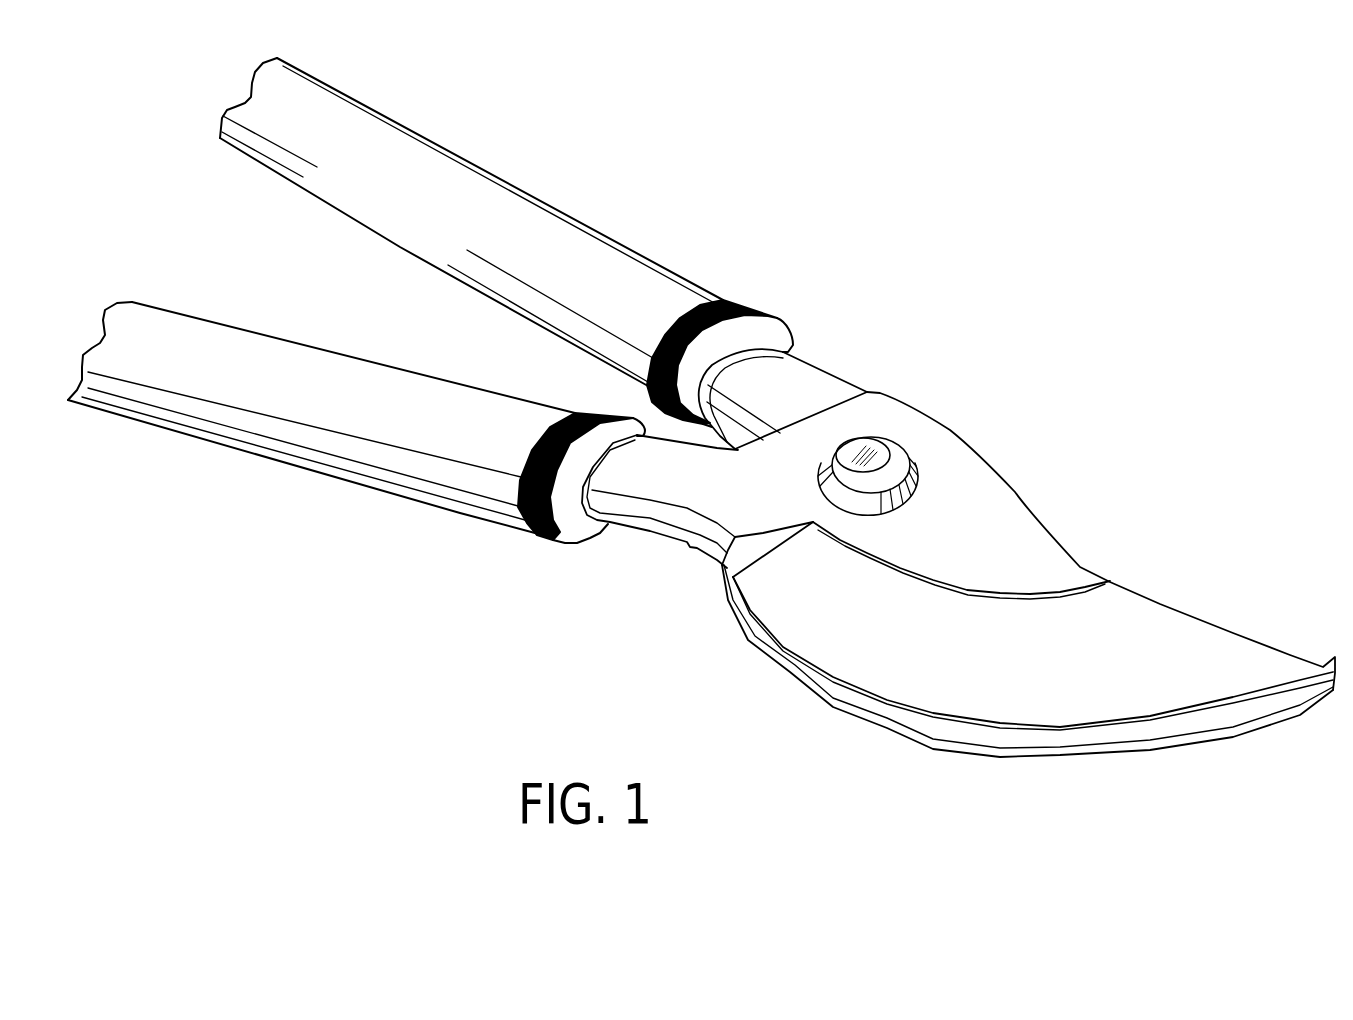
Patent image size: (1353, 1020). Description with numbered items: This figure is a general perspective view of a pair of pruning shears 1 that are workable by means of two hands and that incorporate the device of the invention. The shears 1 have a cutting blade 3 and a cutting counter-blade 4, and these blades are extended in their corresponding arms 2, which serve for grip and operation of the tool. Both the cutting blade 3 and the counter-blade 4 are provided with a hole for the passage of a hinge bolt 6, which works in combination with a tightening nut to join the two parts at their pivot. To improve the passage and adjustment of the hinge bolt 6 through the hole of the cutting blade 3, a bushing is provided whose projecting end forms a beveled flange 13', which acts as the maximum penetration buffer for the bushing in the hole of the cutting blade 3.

The pruning shears 1 is at (701, 444).
The arms 2 is at (562, 277).
The cutting blade 3 is at (937, 675).
The cutting counter-blade 4 is at (1067, 735).
The hinge bolt 6 is at (897, 458).
The beveled flange 13' is at (951, 486).